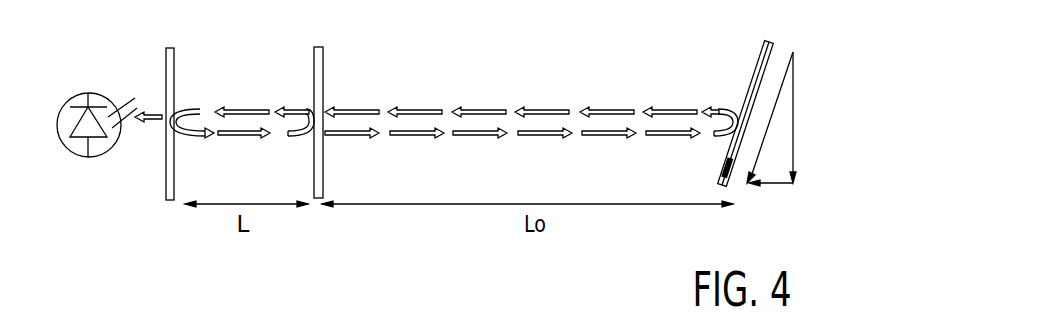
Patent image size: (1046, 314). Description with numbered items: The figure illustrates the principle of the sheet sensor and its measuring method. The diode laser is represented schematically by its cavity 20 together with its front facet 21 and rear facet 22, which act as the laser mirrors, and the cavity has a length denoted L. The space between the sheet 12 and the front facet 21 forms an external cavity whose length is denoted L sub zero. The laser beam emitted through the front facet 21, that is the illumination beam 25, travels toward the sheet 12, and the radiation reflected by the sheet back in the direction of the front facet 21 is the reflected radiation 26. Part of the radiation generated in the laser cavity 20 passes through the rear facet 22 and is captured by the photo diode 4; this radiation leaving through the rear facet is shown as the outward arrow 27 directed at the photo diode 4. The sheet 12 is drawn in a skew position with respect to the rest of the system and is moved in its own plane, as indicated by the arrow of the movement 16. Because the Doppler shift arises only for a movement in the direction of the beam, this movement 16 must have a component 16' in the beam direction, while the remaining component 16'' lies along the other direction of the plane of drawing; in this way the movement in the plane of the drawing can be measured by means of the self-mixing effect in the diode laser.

The photo diode 4 is at (64, 113).
The output light beam arrow 27 is at (150, 120).
The rear facet 22 is at (172, 58).
The front facet 21 is at (322, 55).
The cavity 20 is at (225, 70).
The reflected radiation 26 is at (487, 108).
The illumination beam 25 is at (475, 138).
The sheet 12 is at (758, 72).
The sheet movement 16 is at (715, 121).
The displacement component (vertical) 16'' is at (816, 117).
The movement component in beam direction 16' is at (775, 218).